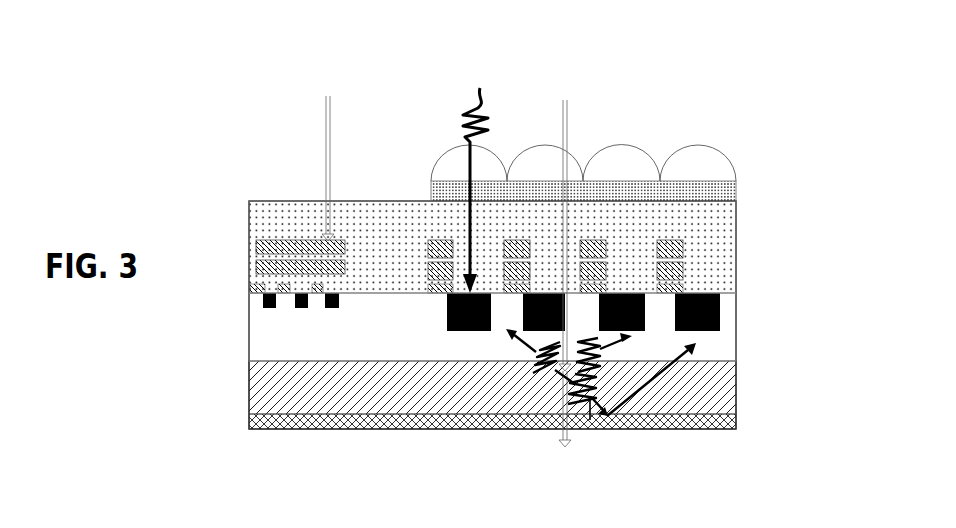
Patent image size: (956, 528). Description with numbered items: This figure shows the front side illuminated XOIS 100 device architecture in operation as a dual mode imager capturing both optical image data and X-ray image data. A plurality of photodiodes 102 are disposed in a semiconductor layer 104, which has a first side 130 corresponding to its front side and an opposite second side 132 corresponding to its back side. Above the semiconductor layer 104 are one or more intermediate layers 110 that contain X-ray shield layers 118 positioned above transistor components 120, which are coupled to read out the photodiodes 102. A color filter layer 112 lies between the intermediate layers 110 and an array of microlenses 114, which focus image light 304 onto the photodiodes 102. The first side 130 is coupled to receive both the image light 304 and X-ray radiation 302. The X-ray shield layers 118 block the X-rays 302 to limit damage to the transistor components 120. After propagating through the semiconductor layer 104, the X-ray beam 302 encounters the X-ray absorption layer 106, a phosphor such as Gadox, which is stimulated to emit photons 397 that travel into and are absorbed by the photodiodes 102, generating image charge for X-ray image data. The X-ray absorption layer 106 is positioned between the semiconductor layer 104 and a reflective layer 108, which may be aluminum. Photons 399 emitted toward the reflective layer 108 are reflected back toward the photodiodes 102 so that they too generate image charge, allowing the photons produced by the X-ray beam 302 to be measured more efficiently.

The front side illuminated XOIS device 100 is at (174, 149).
The photodiodes 102 is at (480, 320).
The semiconductor layer 104 is at (712, 350).
The X-ray absorption layer 106 is at (270, 388).
The reflective layer 108 is at (683, 421).
The intermediate layers 110 is at (713, 244).
The color filter layer 112 is at (736, 183).
The microlenses 114 is at (430, 144).
The X-ray shield layers 118 is at (256, 266).
The transistor components 120 is at (263, 301).
The first side 130 is at (357, 274).
The second side 132 is at (356, 378).
The X-ray radiation 302 is at (447, 261).
The image light 304 is at (479, 167).
The photons 397 is at (534, 358).
The photons 399 is at (590, 420).